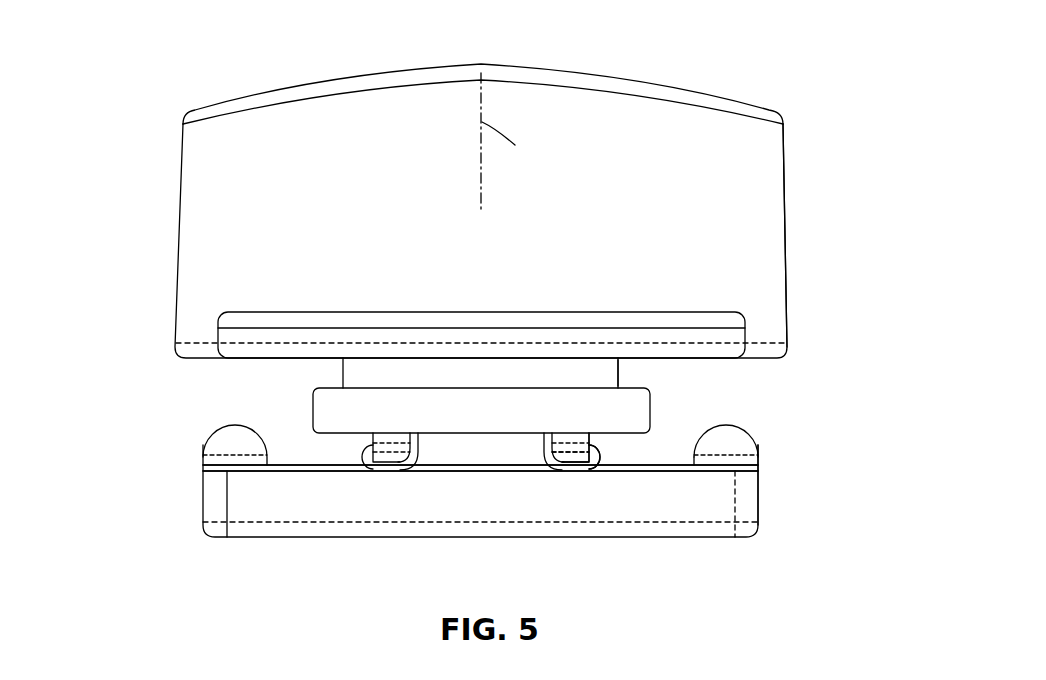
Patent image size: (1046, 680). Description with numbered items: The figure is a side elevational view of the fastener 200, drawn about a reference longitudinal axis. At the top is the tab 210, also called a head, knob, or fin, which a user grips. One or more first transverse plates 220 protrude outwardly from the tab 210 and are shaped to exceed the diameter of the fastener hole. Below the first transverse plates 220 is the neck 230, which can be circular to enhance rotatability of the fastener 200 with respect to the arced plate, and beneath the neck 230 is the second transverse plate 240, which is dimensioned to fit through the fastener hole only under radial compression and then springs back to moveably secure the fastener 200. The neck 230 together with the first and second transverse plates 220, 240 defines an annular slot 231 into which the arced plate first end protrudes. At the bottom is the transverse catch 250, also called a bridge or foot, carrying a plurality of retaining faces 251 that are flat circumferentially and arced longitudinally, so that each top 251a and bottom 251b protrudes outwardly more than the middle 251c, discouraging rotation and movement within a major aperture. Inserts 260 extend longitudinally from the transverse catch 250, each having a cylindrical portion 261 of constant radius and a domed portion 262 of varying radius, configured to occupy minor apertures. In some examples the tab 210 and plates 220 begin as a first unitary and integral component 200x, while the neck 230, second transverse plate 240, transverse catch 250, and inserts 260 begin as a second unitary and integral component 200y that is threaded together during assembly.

The fastener 200 is at (515, 319).
The tab 210 is at (655, 78).
The first transverse plates 220 is at (702, 307).
The neck 230 is at (341, 373).
The annular slot 231 is at (633, 368).
The second transverse plate 240 is at (657, 417).
The retaining faces 251 is at (373, 450).
The top 251a is at (592, 445).
The bottom 251b is at (590, 449).
The middle 251c is at (592, 455).
The transverse catch 250 is at (211, 537).
The inserts 260 is at (476, 456).
The cylindrical portion 261 is at (757, 463).
The domed portion 262 is at (742, 447).
The first unitary and integral component 200x is at (812, 235).
The second unitary and integral component 200y is at (885, 437).